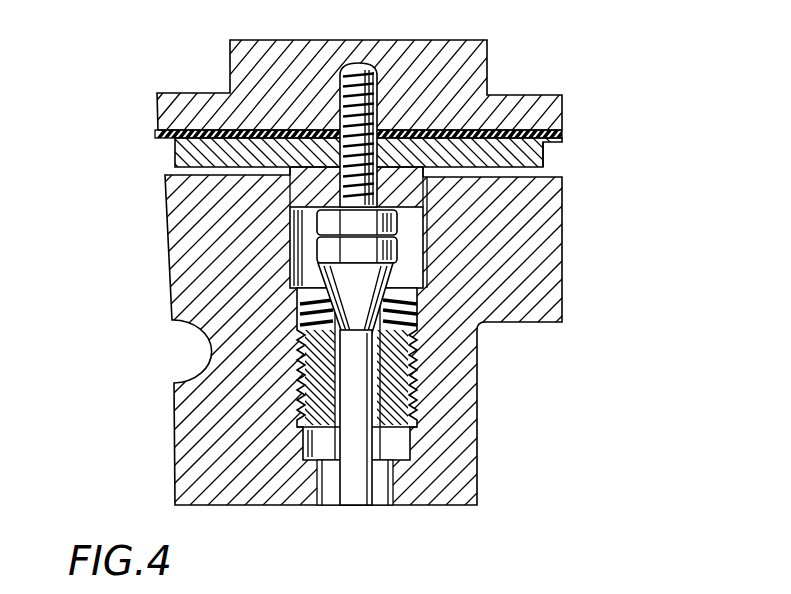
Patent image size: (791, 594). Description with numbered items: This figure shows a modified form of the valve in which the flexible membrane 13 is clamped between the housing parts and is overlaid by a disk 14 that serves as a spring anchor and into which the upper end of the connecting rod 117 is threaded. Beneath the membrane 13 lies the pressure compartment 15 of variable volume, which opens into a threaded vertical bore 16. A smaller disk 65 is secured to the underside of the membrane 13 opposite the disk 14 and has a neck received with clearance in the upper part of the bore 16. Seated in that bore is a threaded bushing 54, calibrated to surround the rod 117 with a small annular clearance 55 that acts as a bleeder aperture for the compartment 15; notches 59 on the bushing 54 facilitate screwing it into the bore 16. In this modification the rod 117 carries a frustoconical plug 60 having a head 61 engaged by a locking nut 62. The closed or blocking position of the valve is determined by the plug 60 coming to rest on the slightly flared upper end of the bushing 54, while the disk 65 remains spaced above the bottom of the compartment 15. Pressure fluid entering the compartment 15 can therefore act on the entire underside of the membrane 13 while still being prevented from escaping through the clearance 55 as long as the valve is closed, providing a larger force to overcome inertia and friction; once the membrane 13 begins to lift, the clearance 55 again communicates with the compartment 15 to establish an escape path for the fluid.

The disk 14 is at (473, 68).
The flexible membrane 13 is at (155, 137).
The pressure compartment 15 is at (167, 152).
The smaller disk 65 is at (545, 155).
The threaded vertical bore 16 is at (413, 270).
The threaded bushing 54 is at (247, 390).
The notches 59 is at (307, 323).
The connecting rod 117 is at (357, 443).
The locking nut 62 is at (320, 212).
The head 61 is at (323, 247).
The frustoconical plug 60 is at (350, 293).
The annular clearance 55 is at (377, 373).